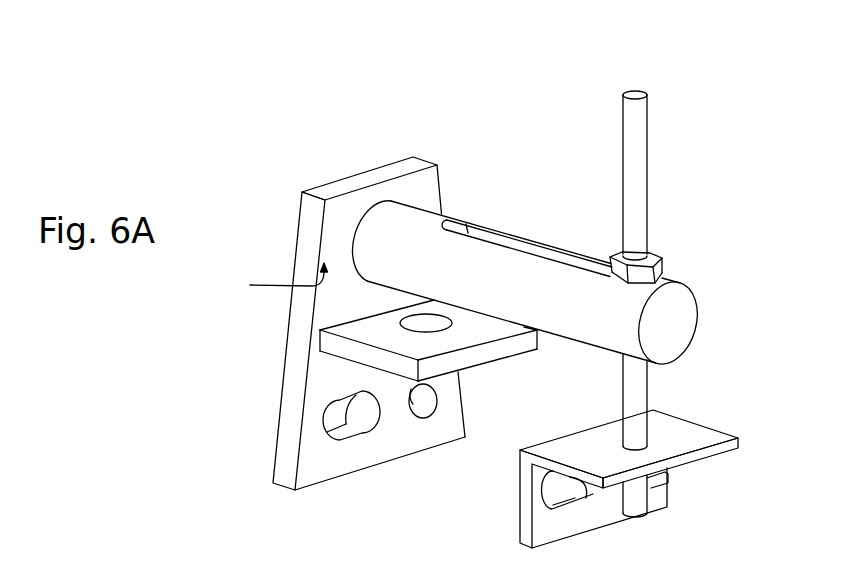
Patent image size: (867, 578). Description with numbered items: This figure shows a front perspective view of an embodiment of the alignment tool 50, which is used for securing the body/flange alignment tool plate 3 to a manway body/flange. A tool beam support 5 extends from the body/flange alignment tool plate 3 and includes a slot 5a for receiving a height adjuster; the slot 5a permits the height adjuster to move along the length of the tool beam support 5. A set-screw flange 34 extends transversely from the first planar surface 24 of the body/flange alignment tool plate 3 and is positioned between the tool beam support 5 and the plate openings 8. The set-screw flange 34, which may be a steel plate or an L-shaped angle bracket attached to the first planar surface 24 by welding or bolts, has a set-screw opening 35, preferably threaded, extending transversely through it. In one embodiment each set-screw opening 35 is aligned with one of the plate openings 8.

The body/flange alignment tool plate 3 is at (313, 224).
The first planar surface 24 is at (276, 280).
The set-screw opening 35 is at (398, 327).
The set-screw flange 34 is at (392, 355).
The tool beam support 5 is at (473, 253).
The slot 5a is at (540, 250).
The plate openings 8 is at (417, 416).
The alignment tool 50 is at (690, 98).